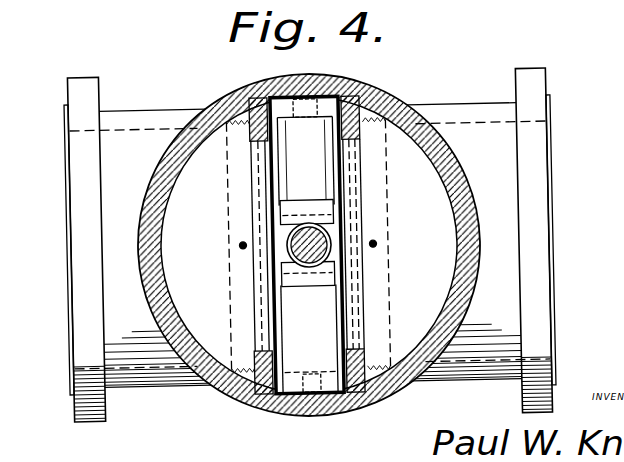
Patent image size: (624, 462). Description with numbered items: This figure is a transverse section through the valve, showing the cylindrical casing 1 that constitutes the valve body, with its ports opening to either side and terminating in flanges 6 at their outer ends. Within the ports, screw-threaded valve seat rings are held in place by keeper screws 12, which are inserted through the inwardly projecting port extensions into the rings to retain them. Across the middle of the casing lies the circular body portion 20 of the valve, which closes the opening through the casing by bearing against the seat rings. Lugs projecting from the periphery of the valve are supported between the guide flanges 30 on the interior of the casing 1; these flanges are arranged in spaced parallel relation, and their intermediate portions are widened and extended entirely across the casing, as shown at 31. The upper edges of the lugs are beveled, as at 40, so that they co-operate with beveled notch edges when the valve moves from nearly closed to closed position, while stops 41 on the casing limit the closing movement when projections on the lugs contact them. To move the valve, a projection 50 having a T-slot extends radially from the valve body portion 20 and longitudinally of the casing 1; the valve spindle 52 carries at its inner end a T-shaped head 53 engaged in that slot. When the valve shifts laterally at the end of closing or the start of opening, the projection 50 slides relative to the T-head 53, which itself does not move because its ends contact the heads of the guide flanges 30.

The cylindrical casing 1 is at (467, 183).
The flange 6 is at (77, 246).
The keeper screw 12 is at (241, 244).
The valve body portion 20 is at (307, 244).
The guide flange 30 is at (250, 137).
The widened intermediate portion of guide flange 31 is at (265, 277).
The beveled edge 40 is at (268, 177).
The stop 41 is at (302, 98).
The projection 50 is at (312, 284).
The valve spindle 52 is at (312, 226).
The T-shaped head 53 is at (283, 240).